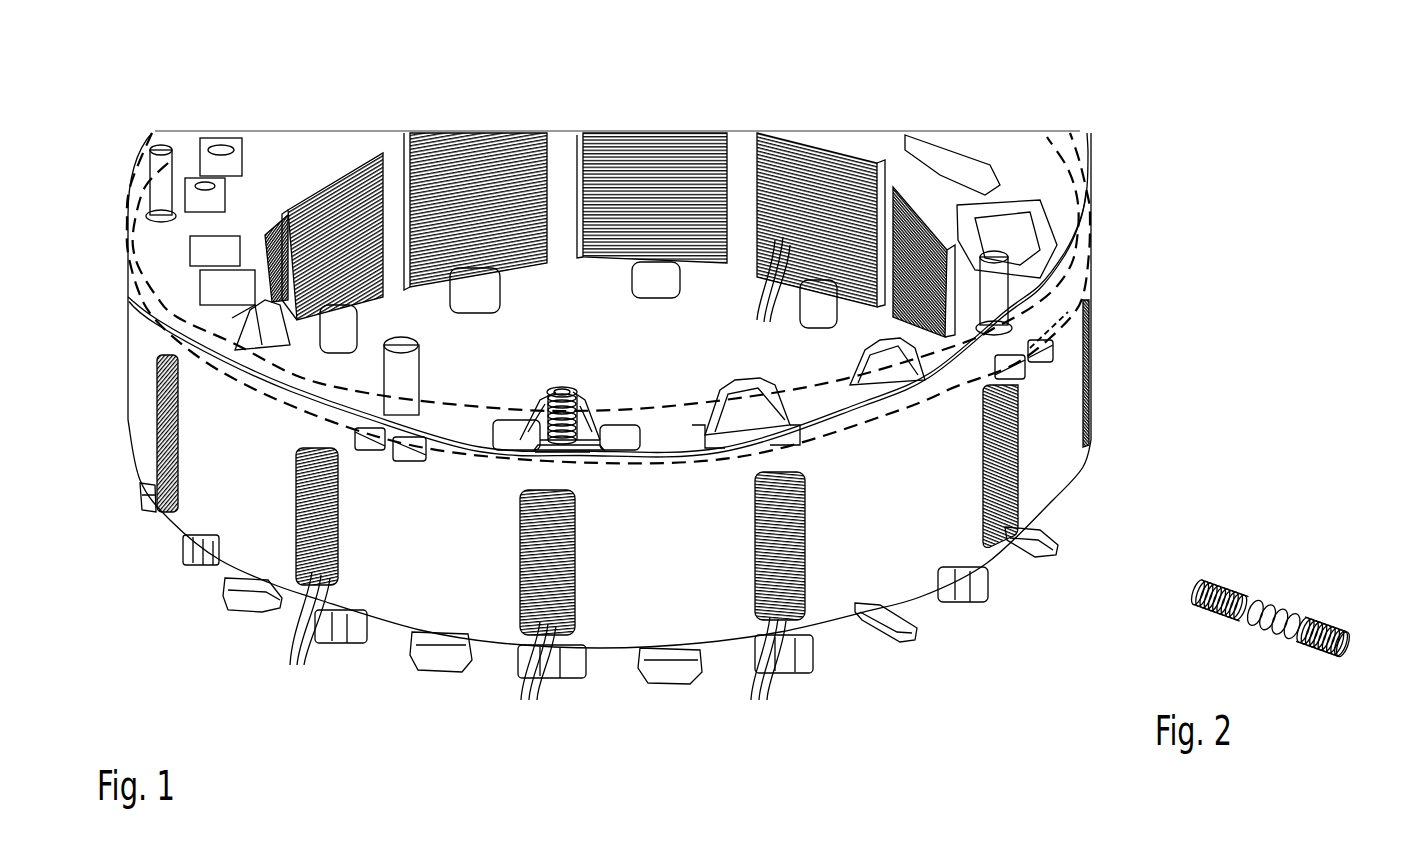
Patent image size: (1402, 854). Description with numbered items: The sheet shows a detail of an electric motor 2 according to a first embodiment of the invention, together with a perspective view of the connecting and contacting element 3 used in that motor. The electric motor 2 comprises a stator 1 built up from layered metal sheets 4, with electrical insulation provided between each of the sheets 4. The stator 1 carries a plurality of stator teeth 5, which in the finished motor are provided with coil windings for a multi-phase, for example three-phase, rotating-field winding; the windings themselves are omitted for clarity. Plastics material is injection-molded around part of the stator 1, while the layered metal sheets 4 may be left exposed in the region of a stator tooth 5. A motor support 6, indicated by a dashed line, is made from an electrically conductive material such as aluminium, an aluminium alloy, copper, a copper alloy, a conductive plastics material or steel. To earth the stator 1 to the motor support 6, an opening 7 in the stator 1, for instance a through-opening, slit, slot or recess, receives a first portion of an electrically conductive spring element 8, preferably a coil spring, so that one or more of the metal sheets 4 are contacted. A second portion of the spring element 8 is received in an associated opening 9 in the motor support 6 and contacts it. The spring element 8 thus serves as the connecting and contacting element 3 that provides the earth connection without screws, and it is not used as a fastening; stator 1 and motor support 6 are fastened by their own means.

In FIG. 1, the stator 1 is at (1065, 400).
In FIG. 1, the electric motor 2 is at (1105, 205).
In FIG. 1, the connecting and contacting element 3 is at (565, 385).
In FIG. 2, the connecting and contacting element 3 is at (1230, 580).
In FIG. 1, the layered metal sheets 4 is at (537, 492).
In FIG. 1, the stator teeth 5 is at (200, 245).
In FIG. 1, the motor support 6 is at (1060, 333).
In FIG. 1, the opening 7 is at (565, 452).
In FIG. 1, the spring element 8 is at (556, 390).
In FIG. 2, the spring element 8 is at (1336, 628).
In FIG. 1, the opening 9 is at (580, 443).